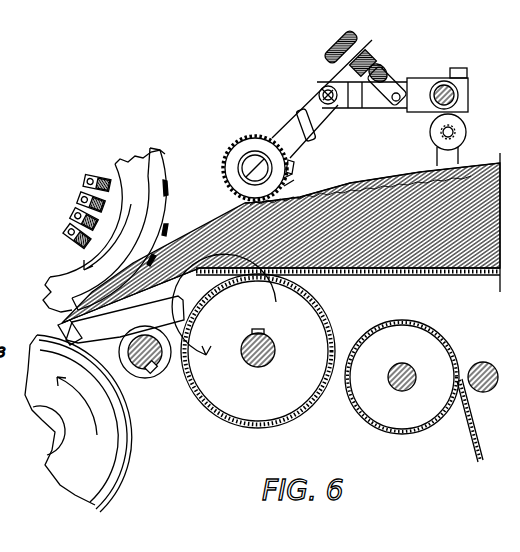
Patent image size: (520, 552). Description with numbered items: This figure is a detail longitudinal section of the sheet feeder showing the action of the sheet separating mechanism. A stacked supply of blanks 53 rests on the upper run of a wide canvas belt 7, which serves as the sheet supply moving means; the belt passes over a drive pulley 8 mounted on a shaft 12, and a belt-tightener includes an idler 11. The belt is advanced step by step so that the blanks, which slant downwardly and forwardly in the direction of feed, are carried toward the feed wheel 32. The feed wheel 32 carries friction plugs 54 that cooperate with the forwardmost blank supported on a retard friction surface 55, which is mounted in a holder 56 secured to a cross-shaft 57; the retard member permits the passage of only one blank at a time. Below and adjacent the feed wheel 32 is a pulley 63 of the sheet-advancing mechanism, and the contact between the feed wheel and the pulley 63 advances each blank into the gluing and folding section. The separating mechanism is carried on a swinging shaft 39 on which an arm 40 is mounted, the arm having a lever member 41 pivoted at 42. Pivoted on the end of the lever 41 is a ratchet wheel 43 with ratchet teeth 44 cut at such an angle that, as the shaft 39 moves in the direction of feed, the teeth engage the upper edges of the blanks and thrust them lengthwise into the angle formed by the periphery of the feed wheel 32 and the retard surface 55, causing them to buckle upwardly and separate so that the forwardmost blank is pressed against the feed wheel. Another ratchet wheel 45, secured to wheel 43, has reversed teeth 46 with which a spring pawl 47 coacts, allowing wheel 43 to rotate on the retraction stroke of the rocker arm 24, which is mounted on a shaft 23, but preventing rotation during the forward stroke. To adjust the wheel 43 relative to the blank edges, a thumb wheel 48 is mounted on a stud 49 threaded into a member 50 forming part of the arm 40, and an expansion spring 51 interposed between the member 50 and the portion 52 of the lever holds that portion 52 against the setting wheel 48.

The wide canvas belt 7 is at (457, 279).
The drive pulley 8 is at (299, 283).
The idler 11 is at (431, 333).
The shaft 12 is at (268, 356).
The shaft 23 is at (492, 390).
The rocker arm 24 is at (459, 157).
The feed wheel 32 is at (152, 163).
The swinging shaft 39 is at (457, 97).
The arm 40 is at (418, 82).
The lever member 41 is at (310, 112).
The pivot 42 is at (325, 88).
The ratchet wheel 43 is at (231, 153).
The ratchet teeth 44 is at (266, 160).
The ratchet wheel 45 is at (289, 178).
The teeth 46 is at (290, 172).
The spring pawl 47 is at (294, 152).
The thumb wheel 48 is at (338, 46).
The stud 49 is at (372, 63).
The member 50 is at (386, 78).
The expansion spring 51 is at (392, 80).
The portion of the lever 52 is at (358, 52).
The stacked supply of blanks 53 is at (367, 176).
The plugs 54 is at (158, 220).
The retard friction surface 55 is at (82, 337).
The holder 56 is at (90, 330).
The cross-shaft 57 is at (153, 367).
The pulley 63 is at (113, 470).